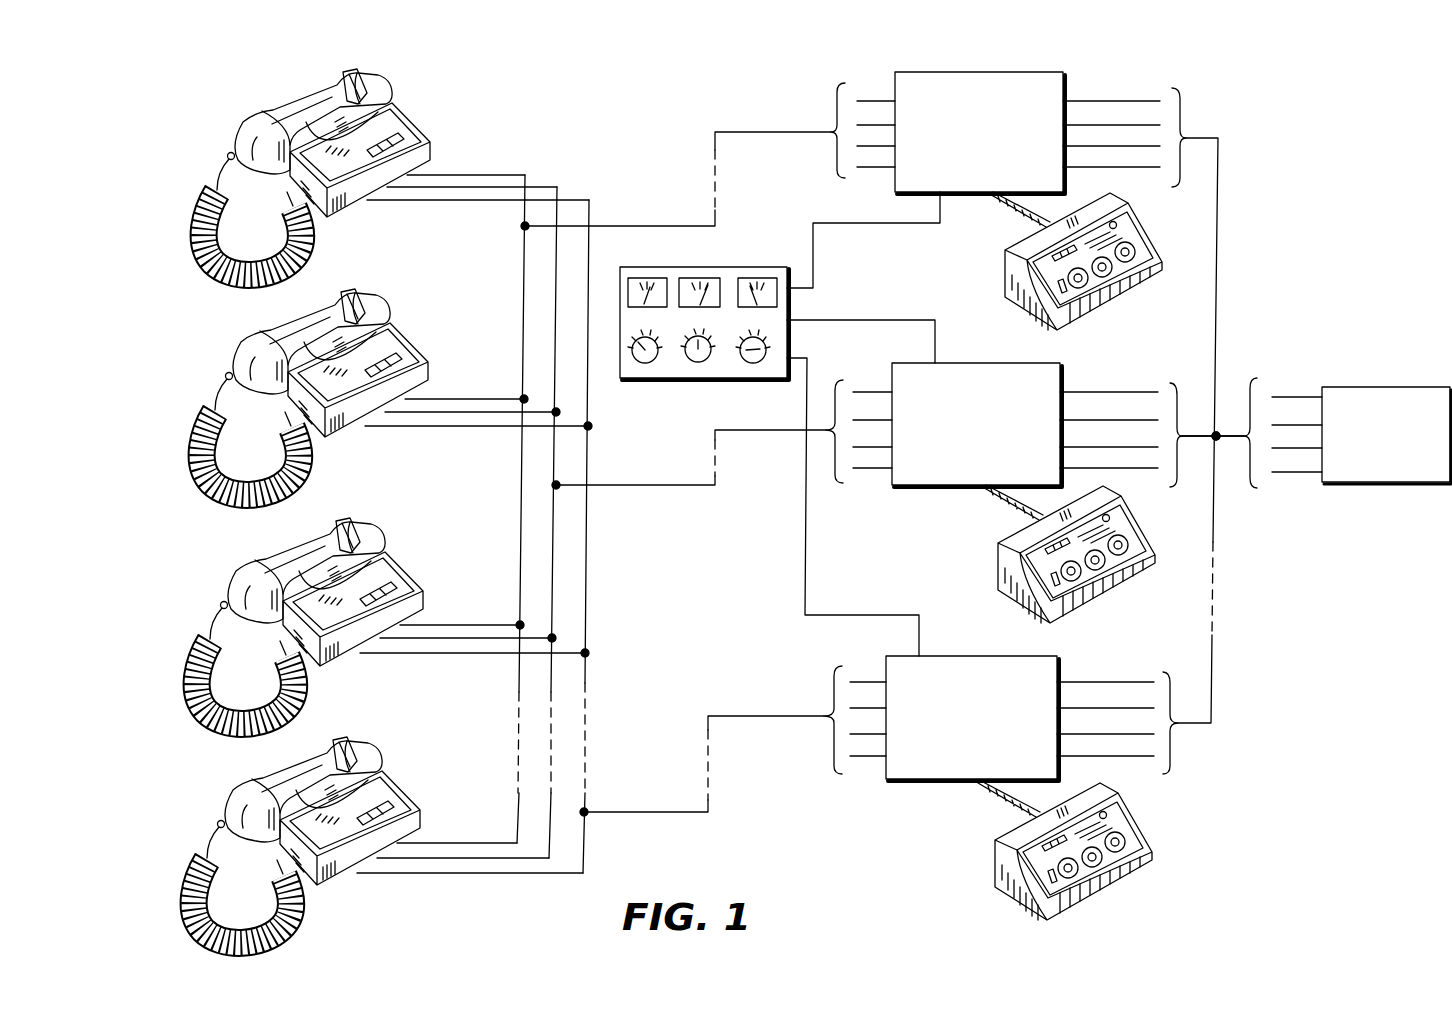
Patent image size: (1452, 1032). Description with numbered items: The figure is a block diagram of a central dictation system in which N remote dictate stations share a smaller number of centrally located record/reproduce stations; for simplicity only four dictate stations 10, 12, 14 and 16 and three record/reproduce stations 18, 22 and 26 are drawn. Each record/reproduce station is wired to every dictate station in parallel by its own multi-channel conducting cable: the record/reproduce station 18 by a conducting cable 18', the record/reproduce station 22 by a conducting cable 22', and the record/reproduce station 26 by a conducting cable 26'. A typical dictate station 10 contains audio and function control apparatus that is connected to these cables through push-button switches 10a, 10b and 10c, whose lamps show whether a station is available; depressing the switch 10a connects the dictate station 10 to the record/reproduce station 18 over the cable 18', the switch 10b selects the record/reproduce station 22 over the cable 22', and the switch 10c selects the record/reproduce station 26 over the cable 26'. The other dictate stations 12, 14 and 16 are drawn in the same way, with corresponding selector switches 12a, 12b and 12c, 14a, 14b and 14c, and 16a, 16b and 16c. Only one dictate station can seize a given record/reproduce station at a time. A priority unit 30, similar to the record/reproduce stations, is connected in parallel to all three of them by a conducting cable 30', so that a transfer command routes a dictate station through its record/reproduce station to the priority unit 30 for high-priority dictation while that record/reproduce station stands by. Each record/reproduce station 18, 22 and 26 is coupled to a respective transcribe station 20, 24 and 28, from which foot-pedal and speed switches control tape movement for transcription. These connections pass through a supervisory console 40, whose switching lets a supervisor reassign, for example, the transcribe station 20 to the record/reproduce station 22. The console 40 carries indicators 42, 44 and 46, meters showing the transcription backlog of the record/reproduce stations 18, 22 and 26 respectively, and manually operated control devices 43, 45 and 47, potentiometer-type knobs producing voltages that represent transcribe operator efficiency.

The remote dictate station 10 is at (294, 157).
The switch 10a is at (313, 112).
The switch 10b is at (362, 90).
The switch 10c is at (384, 148).
The remote dictate station 12 is at (281, 381).
The handset 12a is at (311, 341).
The cradle hookswitch 12b is at (355, 314).
The telephone base unit 12c is at (371, 370).
The remote dictate station 14 is at (276, 613).
The handset 14a is at (306, 566).
The cradle hookswitch 14b is at (358, 546).
The telephone base unit 14c is at (366, 603).
The remote dictate station 16 is at (277, 835).
The handset 16a is at (303, 785).
The cradle hookswitch 16b is at (356, 768).
The telephone base unit 16c is at (366, 821).
The record/reproduce station 18 is at (1040, 119).
The conducting cable 18' is at (710, 154).
The transcribe station 20 is at (997, 261).
The record/reproduce station 22 is at (1037, 411).
The conducting cable 22' is at (724, 432).
The transcribe station 24 is at (1006, 554).
The record/reproduce station 26 is at (1032, 705).
The conducting cable 26' is at (735, 739).
The transcribe station 28 is at (1004, 851).
The priority unit 30 is at (1347, 420).
The conducting cable 30' is at (1219, 473).
The supervisory console 40 is at (705, 324).
The indicator 42 is at (644, 271).
The control device 43 is at (637, 372).
The indicator 44 is at (713, 270).
The control device 45 is at (691, 372).
The indicator 46 is at (768, 270).
The control device 47 is at (740, 367).